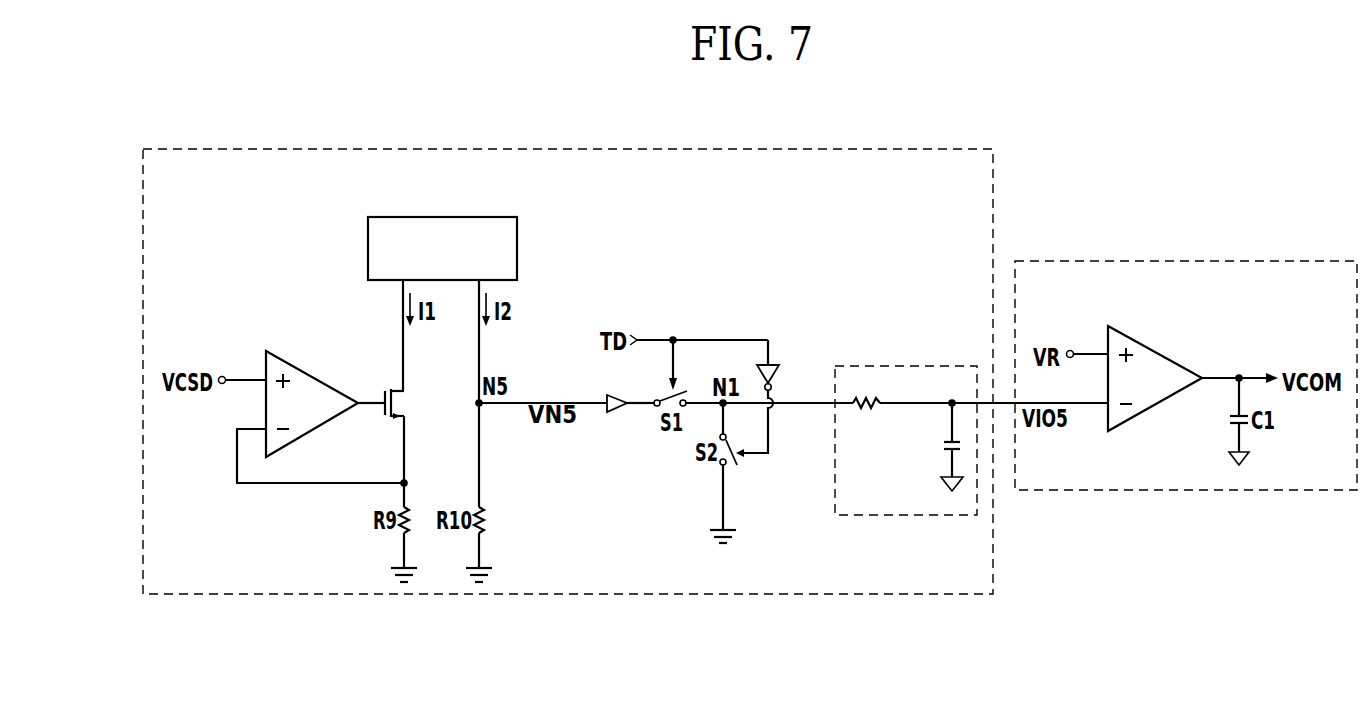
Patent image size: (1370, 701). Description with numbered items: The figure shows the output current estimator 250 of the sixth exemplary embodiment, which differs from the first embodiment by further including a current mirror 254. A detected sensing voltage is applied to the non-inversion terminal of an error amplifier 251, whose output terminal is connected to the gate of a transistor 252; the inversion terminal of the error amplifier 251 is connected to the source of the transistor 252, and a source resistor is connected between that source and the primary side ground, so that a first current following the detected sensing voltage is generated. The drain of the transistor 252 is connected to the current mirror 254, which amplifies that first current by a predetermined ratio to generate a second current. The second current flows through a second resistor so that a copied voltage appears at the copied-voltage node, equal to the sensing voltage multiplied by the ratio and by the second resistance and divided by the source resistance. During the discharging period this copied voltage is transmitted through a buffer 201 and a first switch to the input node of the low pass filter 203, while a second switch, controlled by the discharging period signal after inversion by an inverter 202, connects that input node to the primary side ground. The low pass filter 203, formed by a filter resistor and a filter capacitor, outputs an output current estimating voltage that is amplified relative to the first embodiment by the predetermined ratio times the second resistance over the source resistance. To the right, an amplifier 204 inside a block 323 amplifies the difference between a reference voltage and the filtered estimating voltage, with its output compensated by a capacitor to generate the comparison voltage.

The output current estimator 250 is at (813, 149).
The current mirror 254 is at (443, 217).
The error amplifier 251 is at (314, 374).
The transistor 252 is at (395, 402).
The buffer 201 is at (606, 396).
The inverter 202 is at (779, 373).
The low pass filter 203 is at (915, 366).
The operational amplifier 204 is at (1156, 350).
The common voltage generator 323 is at (1170, 261).